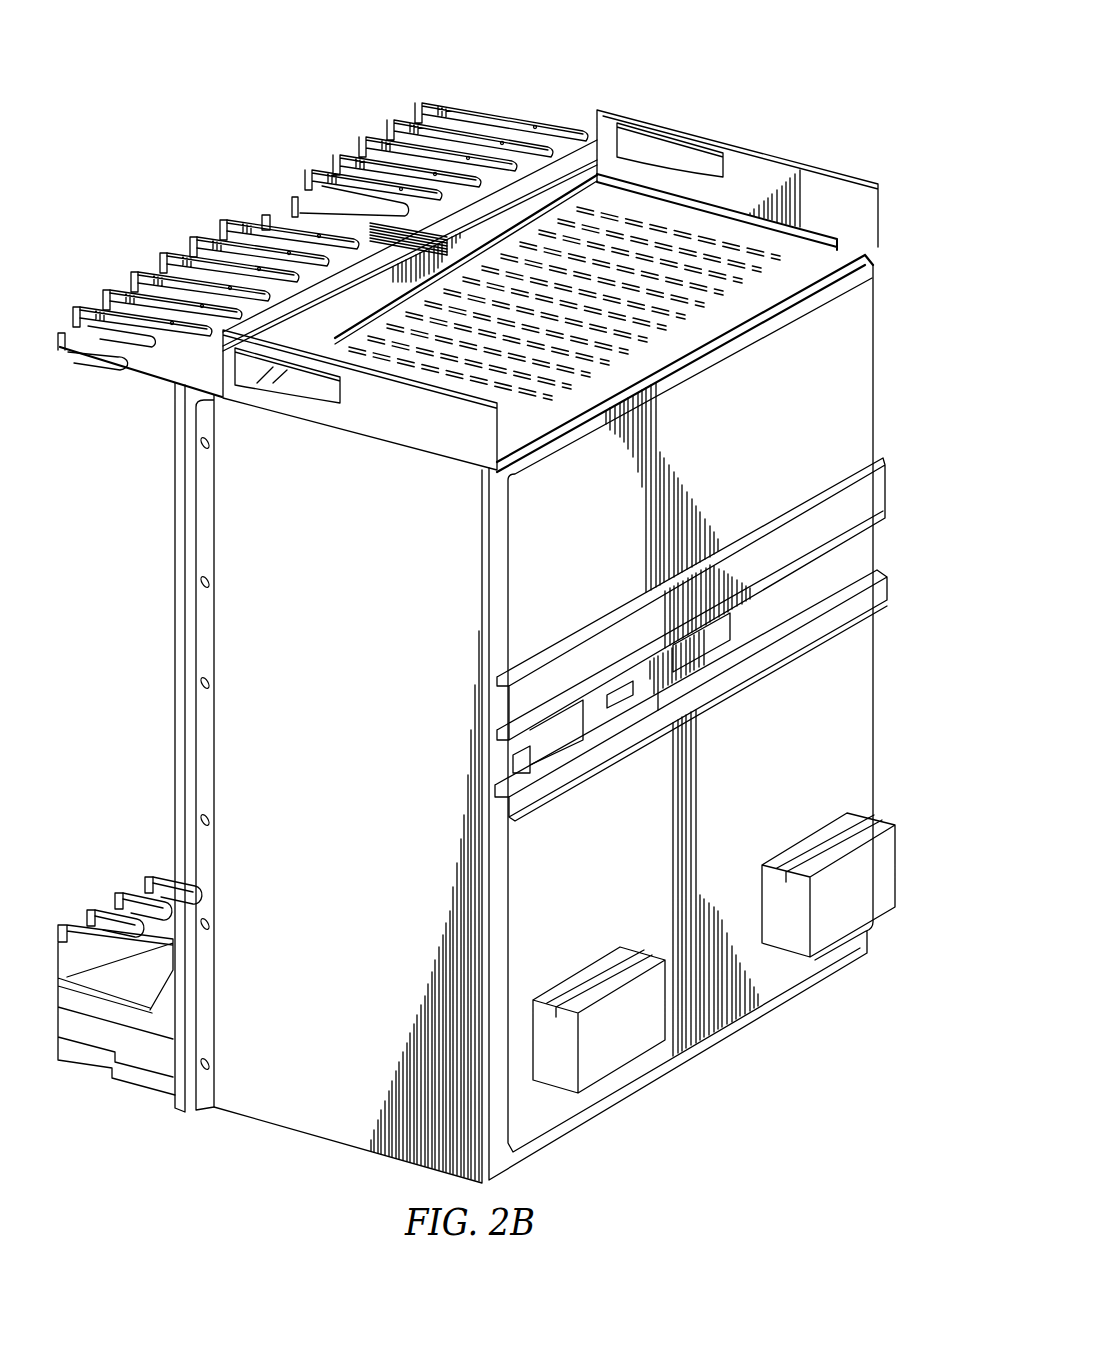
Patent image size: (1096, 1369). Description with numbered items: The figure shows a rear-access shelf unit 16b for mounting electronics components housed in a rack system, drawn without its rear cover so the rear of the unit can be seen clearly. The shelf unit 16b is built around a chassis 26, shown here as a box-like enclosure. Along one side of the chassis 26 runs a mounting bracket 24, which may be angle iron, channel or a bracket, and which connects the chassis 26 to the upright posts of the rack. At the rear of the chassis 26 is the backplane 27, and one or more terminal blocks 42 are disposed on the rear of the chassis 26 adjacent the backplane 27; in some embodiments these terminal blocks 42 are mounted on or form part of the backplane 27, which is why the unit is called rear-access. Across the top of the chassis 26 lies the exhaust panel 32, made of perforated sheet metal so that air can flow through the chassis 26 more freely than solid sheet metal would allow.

The shelf unit 16b is at (716, 74).
The mounting brackets 24 is at (207, 1086).
The chassis 26 is at (361, 637).
The backplane 27 is at (846, 414).
The exhaust panel 32 is at (708, 232).
The terminal blocks 42 is at (594, 974).